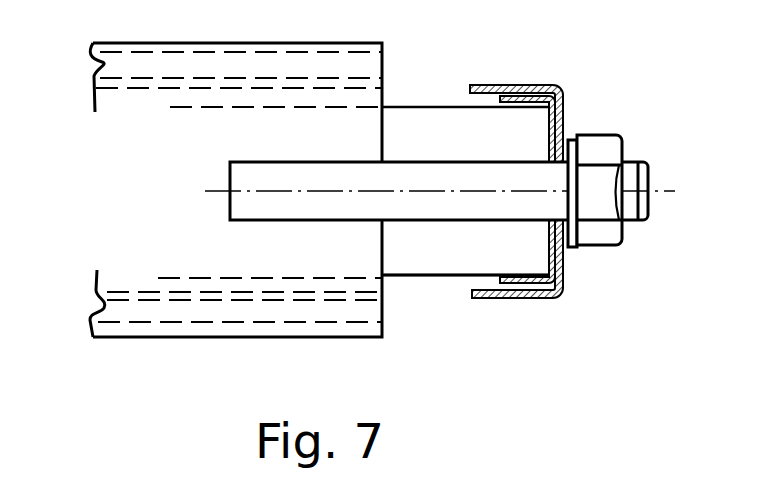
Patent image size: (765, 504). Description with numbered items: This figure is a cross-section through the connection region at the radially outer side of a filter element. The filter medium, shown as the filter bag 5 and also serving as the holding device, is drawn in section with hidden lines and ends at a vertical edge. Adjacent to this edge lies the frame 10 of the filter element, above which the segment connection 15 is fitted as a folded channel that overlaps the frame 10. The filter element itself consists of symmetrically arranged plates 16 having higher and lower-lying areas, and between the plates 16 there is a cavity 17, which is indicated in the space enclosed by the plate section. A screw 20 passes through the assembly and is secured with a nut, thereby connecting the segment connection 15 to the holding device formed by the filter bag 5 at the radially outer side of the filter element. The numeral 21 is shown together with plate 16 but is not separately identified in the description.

The wall panel 5 is at (158, 245).
The bracket 10 is at (532, 284).
The channel member 15 is at (541, 86).
The mounting plate 16 is at (420, 276).
The slot 17 is at (484, 262).
The nut 20 is at (590, 172).
The flange 21 is at (436, 343).